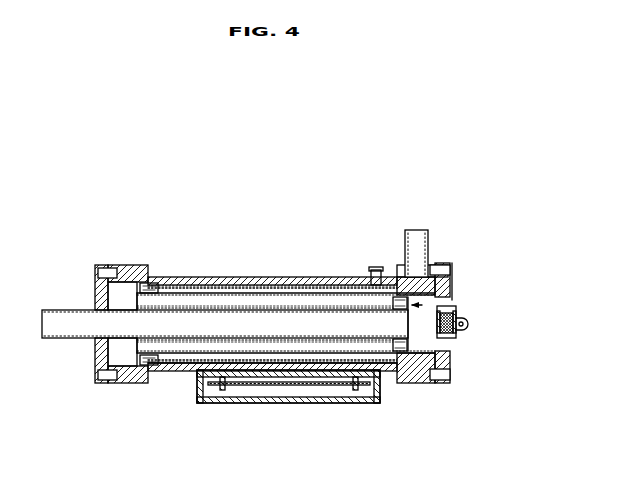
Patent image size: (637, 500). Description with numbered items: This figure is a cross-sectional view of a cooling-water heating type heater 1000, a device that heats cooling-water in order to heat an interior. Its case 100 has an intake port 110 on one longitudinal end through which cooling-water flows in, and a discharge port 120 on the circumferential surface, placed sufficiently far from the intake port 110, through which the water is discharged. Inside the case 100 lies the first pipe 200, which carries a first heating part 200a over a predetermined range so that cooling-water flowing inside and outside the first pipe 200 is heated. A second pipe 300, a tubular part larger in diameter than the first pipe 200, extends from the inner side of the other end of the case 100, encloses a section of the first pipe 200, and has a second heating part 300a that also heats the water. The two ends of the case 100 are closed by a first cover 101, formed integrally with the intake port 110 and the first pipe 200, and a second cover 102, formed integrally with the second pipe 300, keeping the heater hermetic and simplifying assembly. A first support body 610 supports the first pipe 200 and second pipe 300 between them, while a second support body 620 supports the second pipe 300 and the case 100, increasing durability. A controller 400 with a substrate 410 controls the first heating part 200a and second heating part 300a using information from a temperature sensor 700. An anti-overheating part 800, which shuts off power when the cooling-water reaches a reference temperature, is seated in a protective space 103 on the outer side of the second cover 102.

The cooling-water heating type heater 1000 is at (112, 136).
The case 100 is at (234, 255).
The first cover 101 is at (96, 285).
The second cover 102 is at (450, 370).
The space 103 is at (452, 277).
The intake port 110 is at (64, 310).
The discharge port 120 is at (428, 232).
The first pipe 200 is at (346, 305).
The first heating part 200a is at (282, 290).
The second pipe 300 is at (402, 358).
The second heating part 300a is at (192, 363).
The controller 400 is at (272, 420).
The substrate 410 is at (322, 386).
The first support body 610 is at (430, 302).
The second support body 620 is at (160, 280).
The temperature sensor 700 is at (376, 267).
The anti-overheating part 800 is at (462, 330).